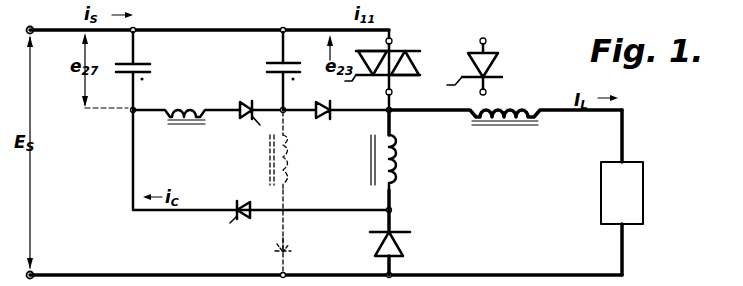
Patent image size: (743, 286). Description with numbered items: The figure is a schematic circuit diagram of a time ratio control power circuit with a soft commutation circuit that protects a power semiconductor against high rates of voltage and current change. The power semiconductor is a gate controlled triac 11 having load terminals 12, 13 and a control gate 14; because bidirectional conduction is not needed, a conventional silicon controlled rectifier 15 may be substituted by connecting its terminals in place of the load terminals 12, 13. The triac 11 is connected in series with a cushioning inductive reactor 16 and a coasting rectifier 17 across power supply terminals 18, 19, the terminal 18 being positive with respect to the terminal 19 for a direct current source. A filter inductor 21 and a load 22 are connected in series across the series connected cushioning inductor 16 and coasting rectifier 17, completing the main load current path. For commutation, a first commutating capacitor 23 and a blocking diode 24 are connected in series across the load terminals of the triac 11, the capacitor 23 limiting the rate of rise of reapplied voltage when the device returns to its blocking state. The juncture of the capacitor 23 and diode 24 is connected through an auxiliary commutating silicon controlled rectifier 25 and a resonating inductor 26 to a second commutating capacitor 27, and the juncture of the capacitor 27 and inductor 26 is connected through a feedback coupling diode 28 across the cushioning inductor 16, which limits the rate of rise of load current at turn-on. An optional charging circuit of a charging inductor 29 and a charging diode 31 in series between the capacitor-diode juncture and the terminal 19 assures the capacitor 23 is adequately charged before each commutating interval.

The triac 11 is at (414, 52).
The load terminal 12 is at (393, 40).
The load terminal 13 is at (393, 92).
The control gate 14 is at (364, 89).
The silicon controlled rectifier 15 is at (490, 66).
The cushioning inductive reactor 16 is at (397, 172).
The coasting rectifier 17 is at (372, 243).
The power supply terminal 18 is at (209, 23).
The power supply terminal 19 is at (97, 272).
The filter inductor 21 is at (535, 108).
The load 22 is at (643, 190).
The first commutating capacitor 23 is at (290, 62).
The blocking diode 24 is at (325, 118).
The auxiliary commutating silicon controlled rectifier 25 is at (243, 103).
The resonating inductor 26 is at (186, 108).
The second commutating capacitor 27 is at (140, 63).
The feedback coupling diode 28 is at (239, 226).
The charging inductor 29 is at (298, 166).
The charging diode 31 is at (290, 246).